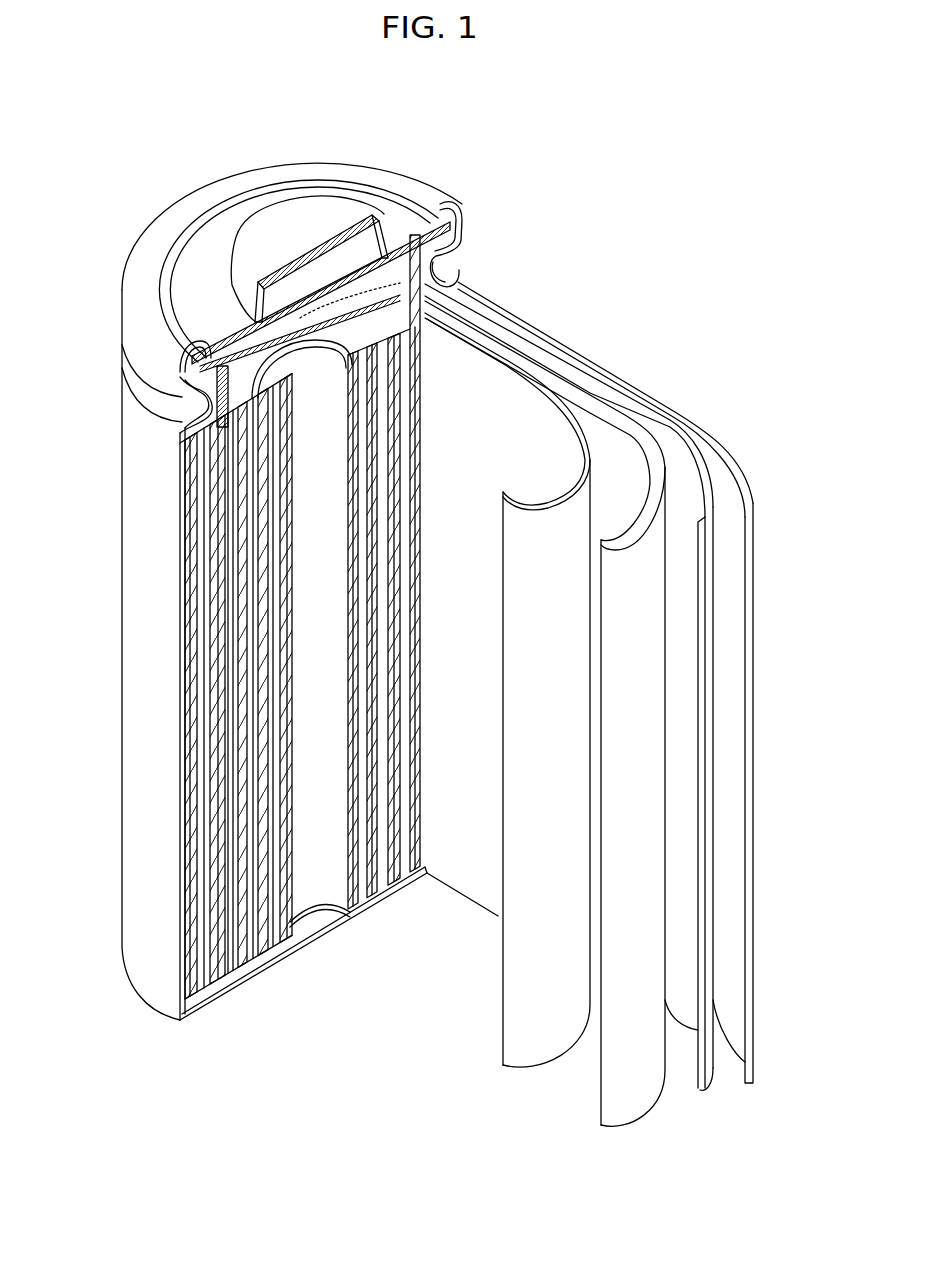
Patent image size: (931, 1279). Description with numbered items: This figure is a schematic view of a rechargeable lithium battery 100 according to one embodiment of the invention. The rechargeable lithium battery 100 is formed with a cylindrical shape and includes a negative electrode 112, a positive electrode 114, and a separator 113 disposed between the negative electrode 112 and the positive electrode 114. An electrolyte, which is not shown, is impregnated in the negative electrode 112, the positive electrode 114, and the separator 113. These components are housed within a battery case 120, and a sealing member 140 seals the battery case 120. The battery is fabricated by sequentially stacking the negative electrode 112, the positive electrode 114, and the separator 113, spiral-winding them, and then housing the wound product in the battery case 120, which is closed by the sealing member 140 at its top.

The rechargeable lithium battery 100 is at (511, 149).
The negative electrode 112 is at (728, 483).
The separator 113 is at (522, 1050).
The positive electrode 114 is at (617, 1100).
The battery case 120 is at (134, 545).
The sealing member 140 is at (263, 226).